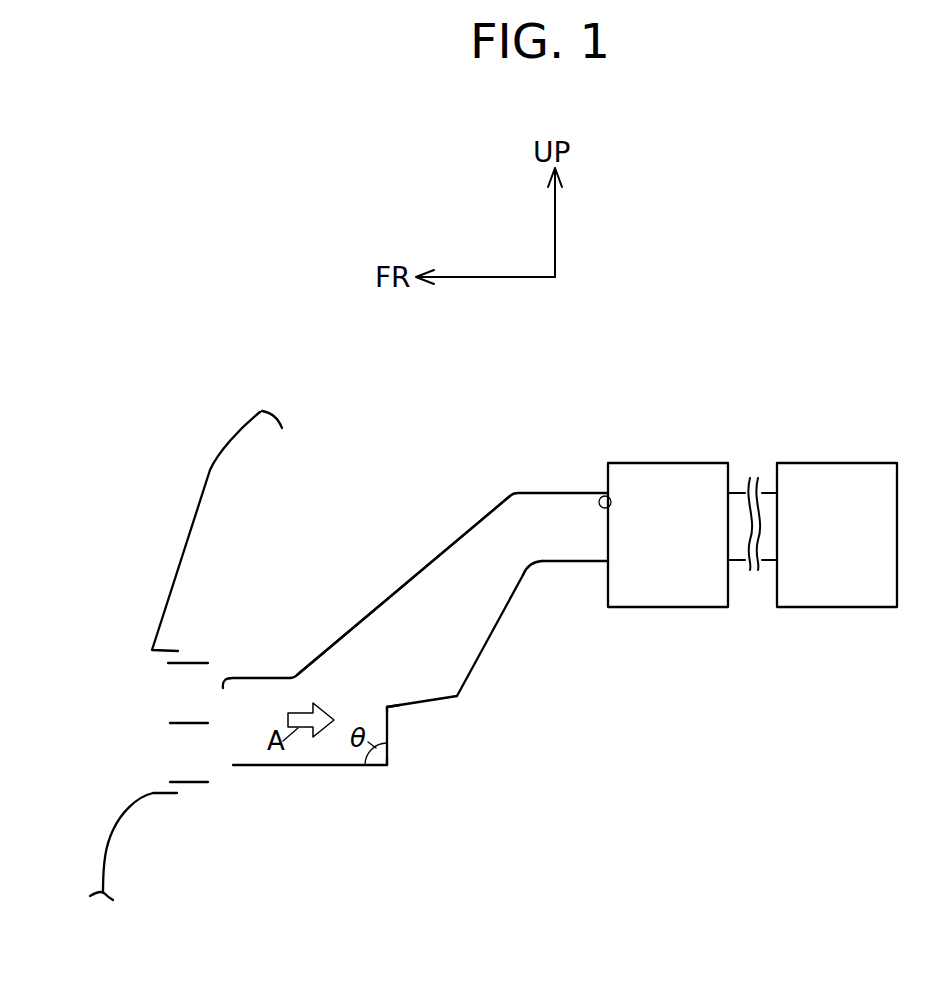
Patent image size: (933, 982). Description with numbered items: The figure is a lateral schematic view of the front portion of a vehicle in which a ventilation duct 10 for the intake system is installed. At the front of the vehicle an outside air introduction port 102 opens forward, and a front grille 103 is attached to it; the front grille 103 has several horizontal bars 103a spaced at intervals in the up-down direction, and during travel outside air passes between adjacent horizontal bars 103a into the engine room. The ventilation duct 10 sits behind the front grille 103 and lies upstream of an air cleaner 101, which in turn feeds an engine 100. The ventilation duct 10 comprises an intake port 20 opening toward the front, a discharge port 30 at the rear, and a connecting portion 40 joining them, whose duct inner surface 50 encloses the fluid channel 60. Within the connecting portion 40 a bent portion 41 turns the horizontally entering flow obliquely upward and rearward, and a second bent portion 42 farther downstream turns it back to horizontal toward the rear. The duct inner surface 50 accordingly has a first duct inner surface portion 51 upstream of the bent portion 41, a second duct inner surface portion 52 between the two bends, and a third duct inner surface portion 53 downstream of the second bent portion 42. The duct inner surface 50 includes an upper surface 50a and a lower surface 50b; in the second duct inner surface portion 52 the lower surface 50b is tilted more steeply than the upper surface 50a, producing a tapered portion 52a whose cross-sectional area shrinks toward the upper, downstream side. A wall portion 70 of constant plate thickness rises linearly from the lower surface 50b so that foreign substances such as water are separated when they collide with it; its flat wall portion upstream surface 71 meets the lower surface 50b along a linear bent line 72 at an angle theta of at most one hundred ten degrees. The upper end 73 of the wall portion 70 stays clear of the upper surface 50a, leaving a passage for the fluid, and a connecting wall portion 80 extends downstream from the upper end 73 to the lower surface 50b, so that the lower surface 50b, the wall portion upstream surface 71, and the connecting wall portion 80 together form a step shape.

The ventilation duct 10 is at (362, 590).
The intake port 20 is at (223, 686).
The discharge port 30 is at (612, 500).
The connecting portion 40 is at (422, 568).
The bent portion 41 is at (282, 642).
The second bent portion 42 is at (507, 468).
The duct inner surface 50 is at (499, 505).
The upper surface 50a is at (462, 536).
The lower surface 50b is at (500, 622).
The first duct inner surface portion 51 is at (324, 765).
The second duct inner surface portion 52 is at (480, 659).
The tapered portion 52a is at (519, 590).
The third duct inner surface portion 53 is at (576, 560).
The fluid channel 60 is at (443, 650).
The wall portion 70 is at (390, 728).
The wall portion upstream surface 71 is at (385, 721).
The linear bent line 72 is at (392, 769).
The upper end 73 is at (388, 704).
The connecting wall portion 80 is at (433, 700).
The engine 100 is at (822, 485).
The air cleaner 101 is at (692, 490).
The outside air introduction port 102 is at (148, 653).
The front grille 103 is at (185, 664).
The horizontal bars 103a is at (192, 662).